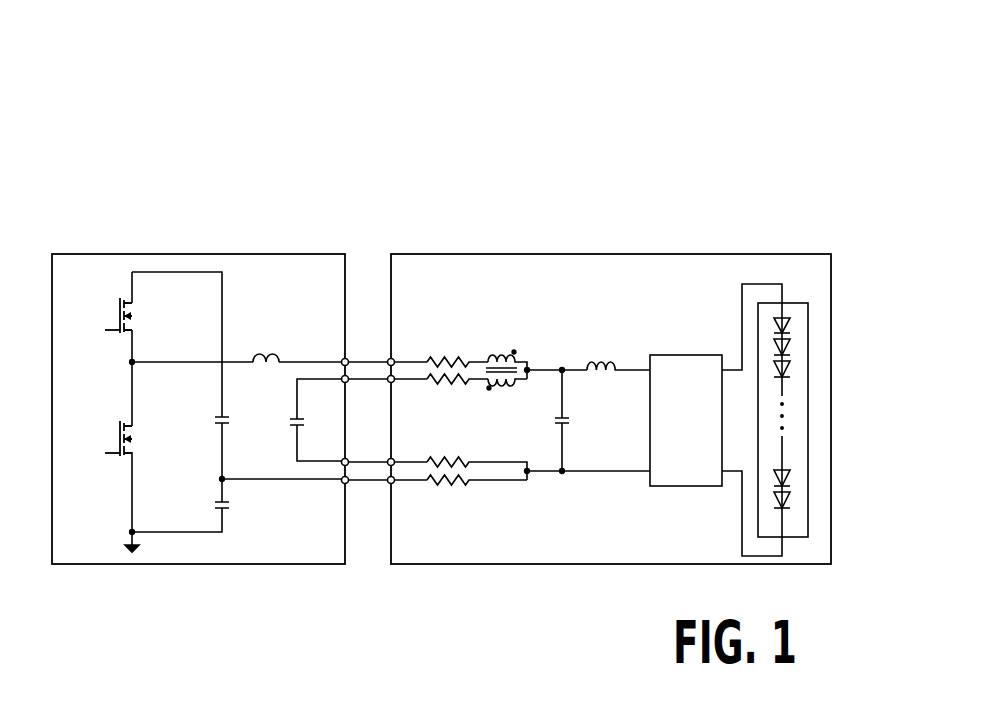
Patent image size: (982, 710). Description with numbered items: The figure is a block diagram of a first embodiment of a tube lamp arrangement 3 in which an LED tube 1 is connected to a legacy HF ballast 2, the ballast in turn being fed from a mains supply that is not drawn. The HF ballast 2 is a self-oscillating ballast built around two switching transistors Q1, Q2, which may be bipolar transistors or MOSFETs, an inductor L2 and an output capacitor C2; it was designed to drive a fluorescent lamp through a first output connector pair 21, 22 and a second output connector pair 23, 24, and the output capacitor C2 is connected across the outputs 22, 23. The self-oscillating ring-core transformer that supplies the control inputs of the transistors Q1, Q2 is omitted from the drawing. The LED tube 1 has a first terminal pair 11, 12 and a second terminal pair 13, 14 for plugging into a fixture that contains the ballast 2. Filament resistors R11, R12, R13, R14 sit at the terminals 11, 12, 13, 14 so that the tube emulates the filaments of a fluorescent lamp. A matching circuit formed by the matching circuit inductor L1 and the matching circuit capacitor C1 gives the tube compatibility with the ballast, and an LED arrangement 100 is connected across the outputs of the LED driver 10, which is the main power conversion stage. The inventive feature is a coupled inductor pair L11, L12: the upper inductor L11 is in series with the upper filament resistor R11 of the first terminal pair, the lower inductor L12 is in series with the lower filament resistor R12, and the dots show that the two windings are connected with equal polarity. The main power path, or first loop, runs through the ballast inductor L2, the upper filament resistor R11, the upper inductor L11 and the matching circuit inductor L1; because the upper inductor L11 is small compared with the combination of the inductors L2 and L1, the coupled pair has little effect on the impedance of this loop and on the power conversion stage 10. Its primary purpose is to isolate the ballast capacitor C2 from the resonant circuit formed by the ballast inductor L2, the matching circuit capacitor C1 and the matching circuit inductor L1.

The LED tube 1 is at (522, 254).
The HF ballast 2 is at (216, 254).
The lighting system 3 is at (676, 118).
The LED driver 10 is at (686, 355).
The LED arrangement 100 is at (794, 302).
The terminal of the first terminal pair 11 is at (393, 360).
The terminal of the first terminal pair 12 is at (389, 377).
The terminal of the second terminal pair 13 is at (389, 460).
The terminal of the second terminal pair 14 is at (389, 482).
The output connector of the first output connector pair 21 is at (343, 360).
The output connector of the first output connector pair 22 is at (343, 378).
The output connector of the second output connector pair 23 is at (343, 464).
The output connector of the second output connector pair 24 is at (343, 482).
The switching transistor Q1 is at (118, 315).
The switching transistor Q2 is at (115, 438).
The matching circuit inductor L1 is at (600, 362).
The ballast inductor L2 is at (260, 356).
The upper inductor L11 is at (497, 352).
The lower inductor L12 is at (497, 389).
The matching circuit capacitor C1 is at (578, 420).
The output capacitor C2 is at (317, 420).
The upper filament resistor R11 is at (457, 343).
The lower filament resistor R12 is at (457, 399).
The filament resistor R13 is at (477, 450).
The filament resistor R14 is at (477, 503).